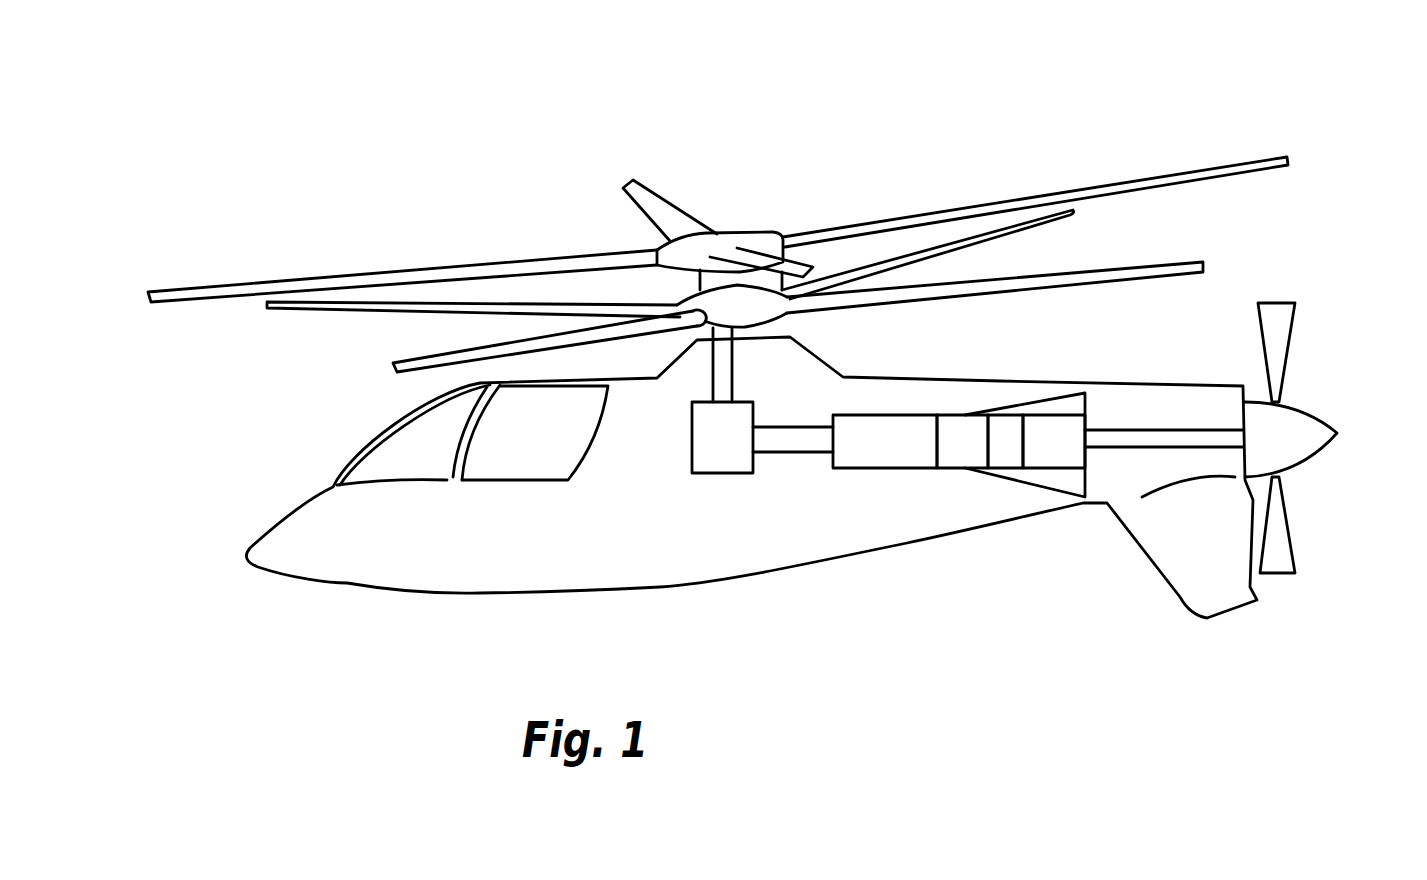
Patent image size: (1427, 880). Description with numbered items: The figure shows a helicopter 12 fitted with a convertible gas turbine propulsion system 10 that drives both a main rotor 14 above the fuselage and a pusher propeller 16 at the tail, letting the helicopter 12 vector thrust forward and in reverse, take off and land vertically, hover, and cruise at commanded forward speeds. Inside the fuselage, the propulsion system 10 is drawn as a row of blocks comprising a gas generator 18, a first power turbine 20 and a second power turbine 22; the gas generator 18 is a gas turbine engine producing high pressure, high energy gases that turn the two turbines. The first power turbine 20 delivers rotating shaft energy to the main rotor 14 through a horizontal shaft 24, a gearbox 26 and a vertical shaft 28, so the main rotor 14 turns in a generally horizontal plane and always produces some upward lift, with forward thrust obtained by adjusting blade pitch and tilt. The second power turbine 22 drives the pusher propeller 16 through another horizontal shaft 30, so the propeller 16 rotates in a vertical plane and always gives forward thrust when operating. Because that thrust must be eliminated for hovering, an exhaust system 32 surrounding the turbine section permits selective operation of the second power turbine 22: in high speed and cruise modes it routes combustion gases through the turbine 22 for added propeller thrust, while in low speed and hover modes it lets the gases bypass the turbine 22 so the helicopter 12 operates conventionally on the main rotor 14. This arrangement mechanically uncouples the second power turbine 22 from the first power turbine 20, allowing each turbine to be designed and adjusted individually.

The convertible gas turbine propulsion system 10 is at (888, 500).
The helicopter 12 is at (288, 456).
The main rotor 14 is at (615, 229).
The pusher propeller 16 is at (1308, 343).
The gas generator 18 is at (878, 456).
The first power turbine 20 is at (953, 457).
The second power turbine 22 is at (1045, 451).
The horizontal shaft 24 is at (788, 440).
The gearbox 26 is at (743, 461).
The vertical shaft 28 is at (723, 373).
The horizontal shaft 30 is at (1142, 435).
The exhaust system 32 is at (1062, 480).